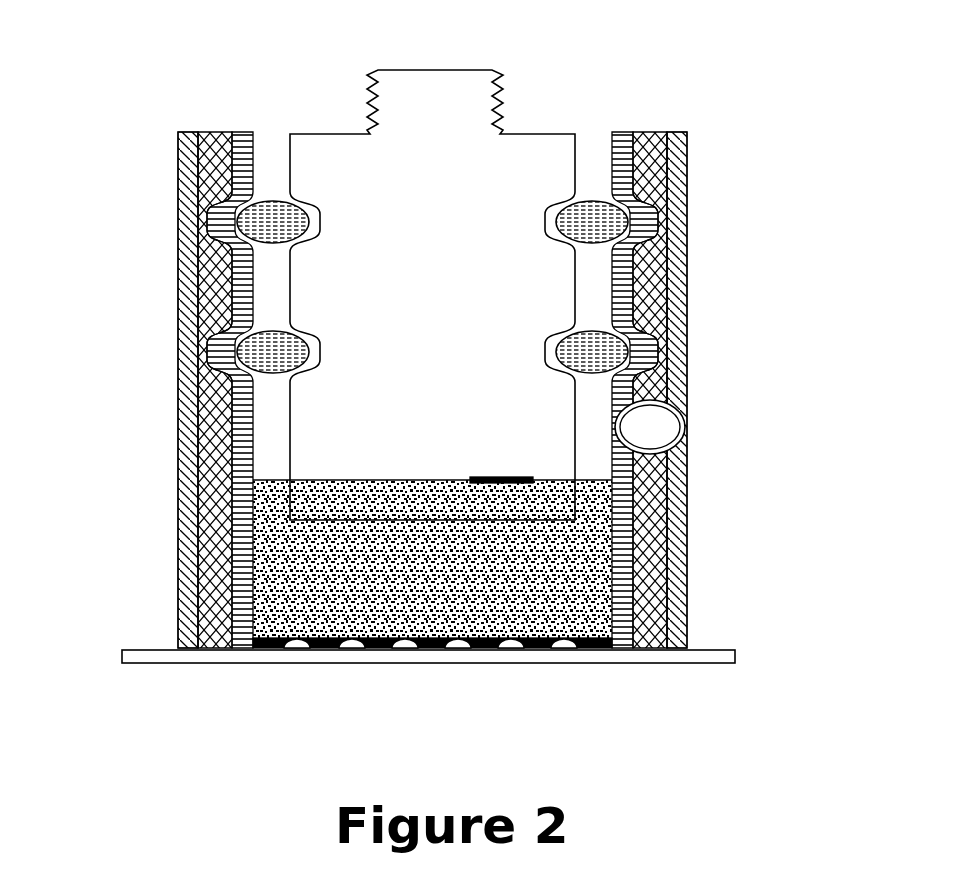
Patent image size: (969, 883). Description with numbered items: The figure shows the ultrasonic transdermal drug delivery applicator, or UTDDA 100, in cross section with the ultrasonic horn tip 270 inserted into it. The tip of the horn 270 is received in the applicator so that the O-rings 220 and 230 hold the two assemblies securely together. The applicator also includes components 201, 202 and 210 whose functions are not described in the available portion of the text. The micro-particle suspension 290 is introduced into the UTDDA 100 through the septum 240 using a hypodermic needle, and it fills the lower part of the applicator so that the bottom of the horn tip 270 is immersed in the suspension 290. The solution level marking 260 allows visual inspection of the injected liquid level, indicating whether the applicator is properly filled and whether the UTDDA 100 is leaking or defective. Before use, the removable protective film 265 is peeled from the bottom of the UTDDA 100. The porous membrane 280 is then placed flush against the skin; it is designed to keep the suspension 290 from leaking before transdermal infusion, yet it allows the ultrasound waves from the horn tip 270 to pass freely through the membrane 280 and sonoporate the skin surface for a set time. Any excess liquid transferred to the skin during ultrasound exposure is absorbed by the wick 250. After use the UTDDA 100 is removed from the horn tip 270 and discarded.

The ultrasonic transdermal drug delivery applicator (UTDDA) 100 is at (612, 71).
The inner liner layer 201 is at (252, 130).
The outer housing wall 202 is at (177, 385).
The threaded container body 210 is at (337, 133).
The O-ring 220 is at (627, 221).
The O-ring 230 is at (690, 348).
The septum 240 is at (658, 427).
The wick 250 is at (620, 489).
The solution level marking 260 is at (688, 513).
The removable protective film 265 is at (120, 650).
The ultrasonic horn tip 270 is at (403, 525).
The porous membrane 280 is at (430, 650).
The micro-particle suspension 290 is at (638, 582).